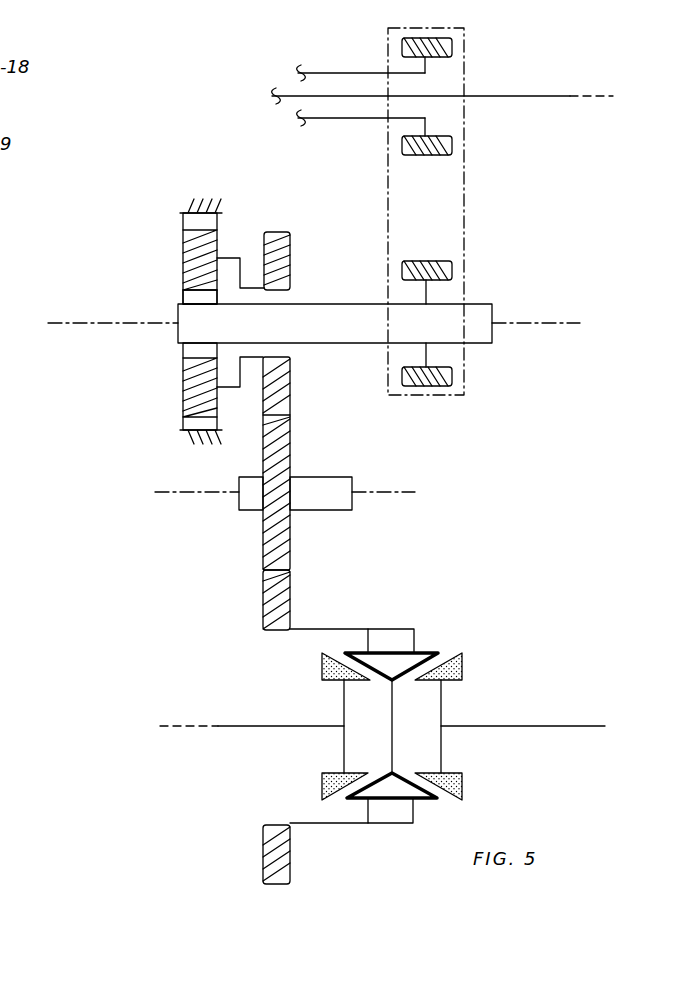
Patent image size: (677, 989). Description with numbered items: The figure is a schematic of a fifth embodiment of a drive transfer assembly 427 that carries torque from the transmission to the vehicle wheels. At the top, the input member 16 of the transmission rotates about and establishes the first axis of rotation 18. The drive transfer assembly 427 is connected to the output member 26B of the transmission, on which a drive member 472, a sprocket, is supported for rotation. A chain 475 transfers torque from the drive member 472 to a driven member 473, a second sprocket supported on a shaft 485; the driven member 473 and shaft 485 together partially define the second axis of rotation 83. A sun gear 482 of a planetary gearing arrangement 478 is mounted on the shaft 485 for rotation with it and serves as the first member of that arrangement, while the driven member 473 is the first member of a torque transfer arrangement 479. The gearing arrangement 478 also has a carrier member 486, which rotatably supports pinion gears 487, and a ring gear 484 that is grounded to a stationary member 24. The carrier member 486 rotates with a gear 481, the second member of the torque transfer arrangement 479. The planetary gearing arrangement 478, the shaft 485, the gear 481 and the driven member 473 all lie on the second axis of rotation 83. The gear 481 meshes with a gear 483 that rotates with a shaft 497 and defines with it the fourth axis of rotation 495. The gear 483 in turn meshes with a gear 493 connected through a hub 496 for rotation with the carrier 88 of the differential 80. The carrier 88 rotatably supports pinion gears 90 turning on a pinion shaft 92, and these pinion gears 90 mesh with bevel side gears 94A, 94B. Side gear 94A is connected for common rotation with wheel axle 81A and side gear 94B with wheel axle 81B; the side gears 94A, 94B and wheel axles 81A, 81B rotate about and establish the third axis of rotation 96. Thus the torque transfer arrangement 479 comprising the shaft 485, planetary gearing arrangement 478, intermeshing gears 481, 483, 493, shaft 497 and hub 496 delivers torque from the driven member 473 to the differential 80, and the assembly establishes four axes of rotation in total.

The input member 16 is at (510, 96).
The axis of rotation 18 is at (593, 96).
The stationary member 24 is at (177, 200).
The output member 26B is at (322, 73).
The differential 80 is at (478, 610).
The wheel axle 81A is at (257, 726).
The wheel axle 81B is at (532, 726).
The second axis of rotation 83 is at (68, 322).
The carrier 88 is at (432, 645).
The pinion gears 90 is at (425, 805).
The pinion shaft 92 is at (392, 705).
The side gear 94A is at (333, 680).
The side gear 94B is at (450, 680).
The third axis of rotation 96 is at (172, 726).
The drive transfer assembly 427 is at (568, 252).
The drive member 472 is at (402, 48).
The driven member 473 is at (455, 270).
The chain 475 is at (464, 203).
The gearing arrangement 478 is at (152, 365).
The torque transfer arrangement 479 is at (568, 175).
The gear 481 is at (282, 232).
The sun gear 482 is at (183, 296).
The gear 483 is at (263, 540).
The ring gear 484 is at (183, 222).
The shaft 485 is at (360, 304).
The carrier member 486 is at (228, 258).
The pinion gears 487 is at (183, 260).
The gear 493 is at (263, 600).
The fourth axis of rotation 495 is at (165, 492).
The hub 496 is at (330, 629).
The shaft 497 is at (320, 477).